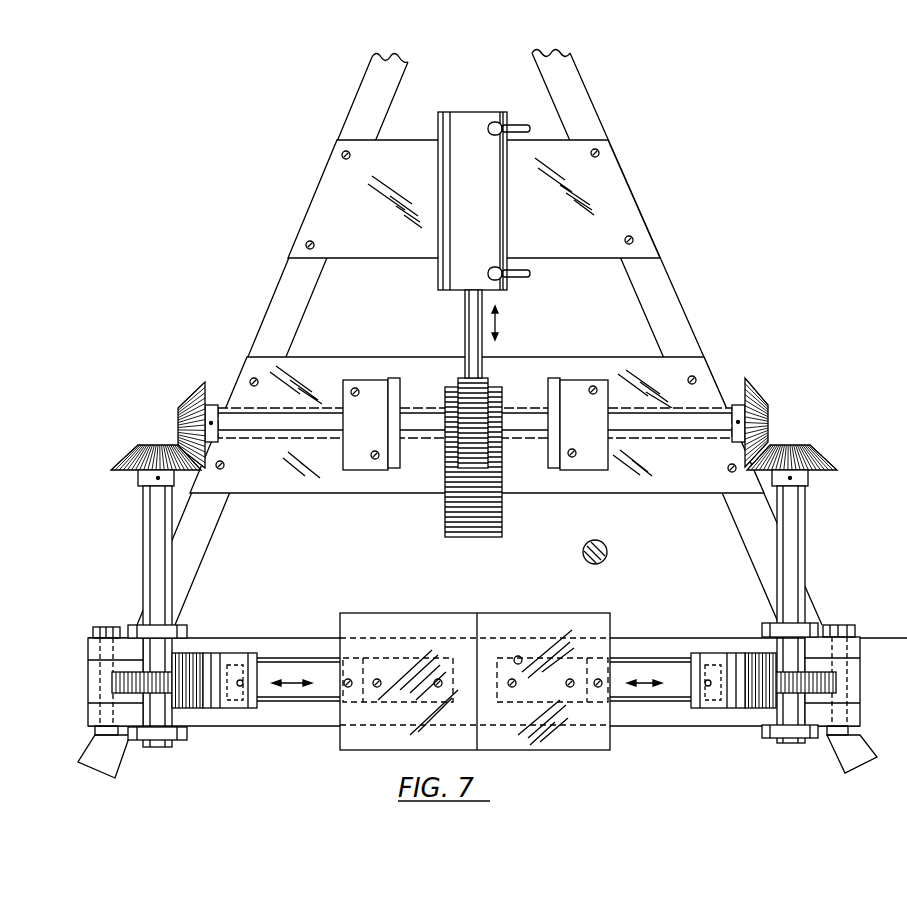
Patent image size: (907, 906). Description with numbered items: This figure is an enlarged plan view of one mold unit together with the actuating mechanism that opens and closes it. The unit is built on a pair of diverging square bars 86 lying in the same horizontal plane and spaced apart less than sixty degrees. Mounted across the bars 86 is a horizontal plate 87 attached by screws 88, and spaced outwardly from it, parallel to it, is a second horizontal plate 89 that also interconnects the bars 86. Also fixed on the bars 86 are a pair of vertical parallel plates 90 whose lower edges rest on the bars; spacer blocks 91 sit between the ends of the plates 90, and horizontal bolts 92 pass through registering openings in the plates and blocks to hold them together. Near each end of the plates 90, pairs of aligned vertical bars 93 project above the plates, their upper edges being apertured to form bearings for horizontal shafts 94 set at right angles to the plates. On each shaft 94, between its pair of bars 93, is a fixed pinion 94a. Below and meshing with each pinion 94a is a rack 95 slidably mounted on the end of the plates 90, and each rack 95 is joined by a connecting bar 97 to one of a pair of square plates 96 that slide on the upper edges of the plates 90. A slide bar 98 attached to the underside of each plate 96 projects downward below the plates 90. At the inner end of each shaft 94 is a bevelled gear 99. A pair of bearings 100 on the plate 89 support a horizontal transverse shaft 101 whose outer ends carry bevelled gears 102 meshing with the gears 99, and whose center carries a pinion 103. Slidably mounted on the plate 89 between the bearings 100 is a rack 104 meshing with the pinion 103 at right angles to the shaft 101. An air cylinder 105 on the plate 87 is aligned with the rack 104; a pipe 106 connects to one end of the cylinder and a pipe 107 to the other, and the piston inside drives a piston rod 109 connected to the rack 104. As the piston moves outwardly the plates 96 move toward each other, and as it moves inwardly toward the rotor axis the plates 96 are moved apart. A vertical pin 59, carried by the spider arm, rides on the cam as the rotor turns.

The vertical pin 59 is at (607, 553).
The diverging square bars 86 is at (285, 278).
The horizontal plate 87 is at (610, 181).
The screws 88 is at (600, 153).
The horizontal plate 89 is at (692, 366).
The vertical parallel plates 90 is at (97, 716).
The spacer blocks 91 is at (92, 673).
The horizontal bolts 92 is at (95, 736).
The vertical bars 93 is at (147, 630).
The horizontal shaft 94 is at (152, 528).
The pinion 94a is at (203, 662).
The rack 95 is at (245, 657).
The square plates 96 is at (447, 618).
The connecting bar 97 is at (278, 695).
The slide bar 98 is at (518, 656).
The bevelled gear 99 is at (146, 445).
The bearings 100 is at (416, 342).
The horizontal transverse shaft 101 is at (352, 430).
The bevelled gears 102 is at (193, 396).
The pinion 103 is at (488, 382).
The rack 104 is at (465, 512).
The air cylinder 105 is at (452, 266).
The pipe 106 is at (522, 279).
The pipe 107 is at (540, 104).
The piston rod 109 is at (470, 307).